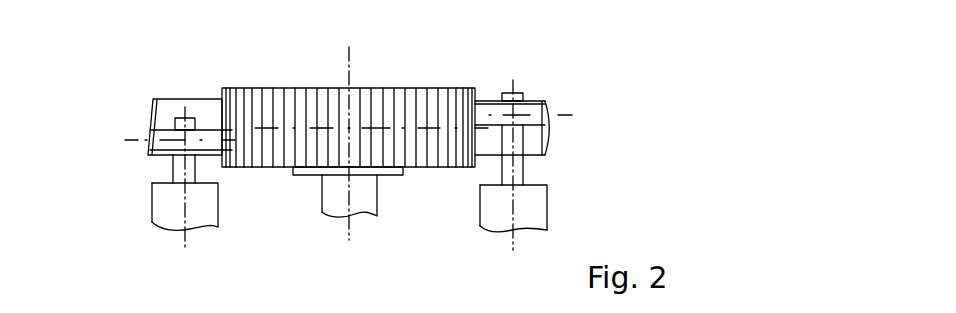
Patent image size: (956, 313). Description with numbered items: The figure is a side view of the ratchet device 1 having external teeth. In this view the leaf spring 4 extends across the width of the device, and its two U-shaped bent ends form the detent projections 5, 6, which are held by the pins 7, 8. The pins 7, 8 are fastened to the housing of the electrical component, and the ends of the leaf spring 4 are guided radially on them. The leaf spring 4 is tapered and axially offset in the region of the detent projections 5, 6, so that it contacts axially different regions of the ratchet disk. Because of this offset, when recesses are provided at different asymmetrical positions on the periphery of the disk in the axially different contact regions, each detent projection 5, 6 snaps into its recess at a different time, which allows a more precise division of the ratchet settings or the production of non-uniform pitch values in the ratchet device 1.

The ratchet device 1 is at (272, 75).
The leaf spring 4 is at (540, 137).
The detent projection 5 is at (542, 100).
The detent projection 6 is at (163, 142).
The pin 7 is at (518, 167).
The pin 8 is at (183, 165).